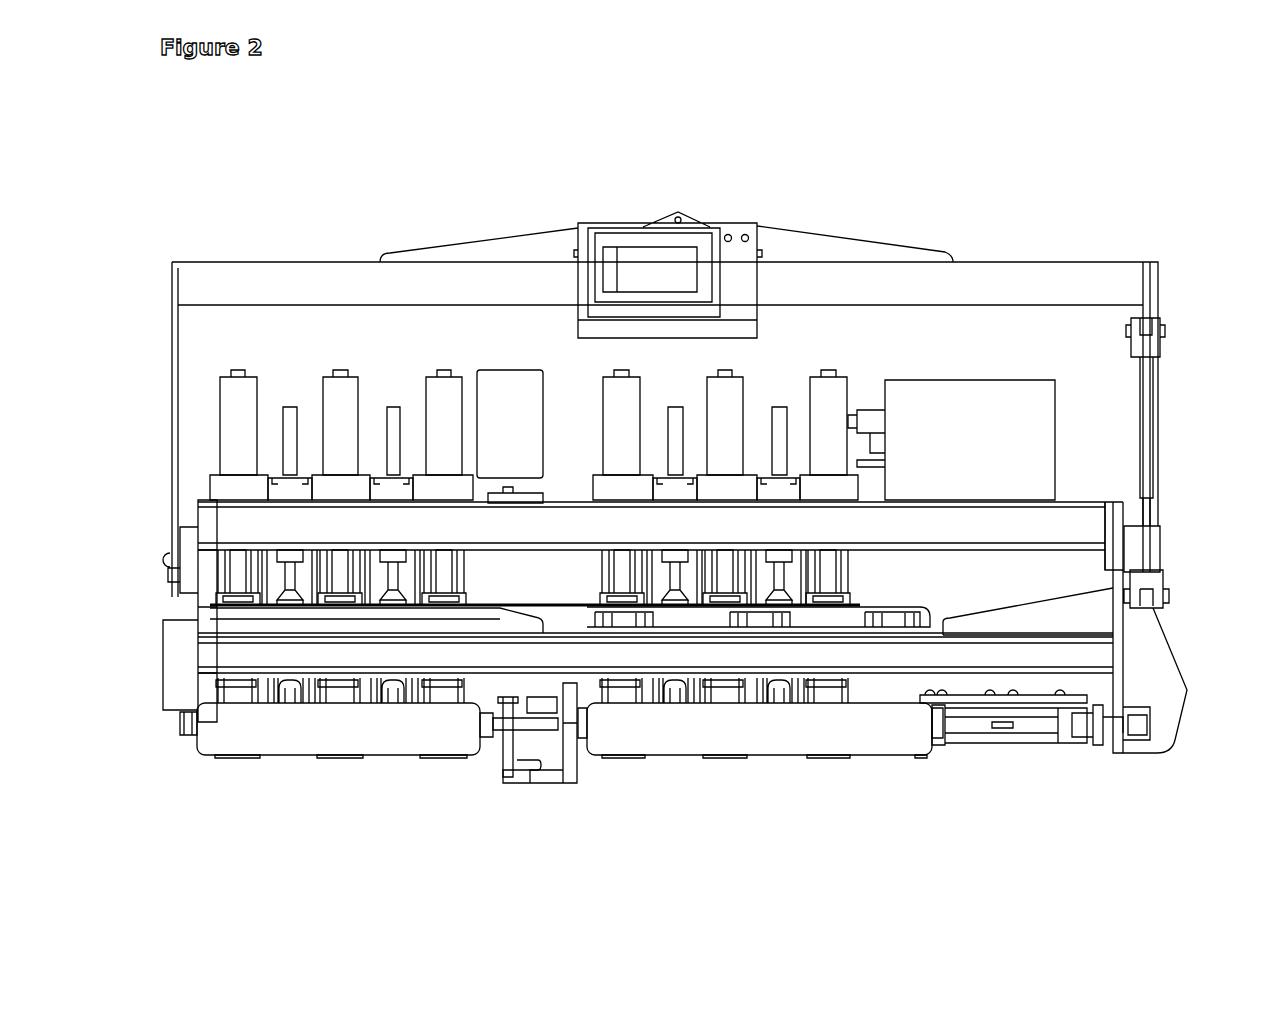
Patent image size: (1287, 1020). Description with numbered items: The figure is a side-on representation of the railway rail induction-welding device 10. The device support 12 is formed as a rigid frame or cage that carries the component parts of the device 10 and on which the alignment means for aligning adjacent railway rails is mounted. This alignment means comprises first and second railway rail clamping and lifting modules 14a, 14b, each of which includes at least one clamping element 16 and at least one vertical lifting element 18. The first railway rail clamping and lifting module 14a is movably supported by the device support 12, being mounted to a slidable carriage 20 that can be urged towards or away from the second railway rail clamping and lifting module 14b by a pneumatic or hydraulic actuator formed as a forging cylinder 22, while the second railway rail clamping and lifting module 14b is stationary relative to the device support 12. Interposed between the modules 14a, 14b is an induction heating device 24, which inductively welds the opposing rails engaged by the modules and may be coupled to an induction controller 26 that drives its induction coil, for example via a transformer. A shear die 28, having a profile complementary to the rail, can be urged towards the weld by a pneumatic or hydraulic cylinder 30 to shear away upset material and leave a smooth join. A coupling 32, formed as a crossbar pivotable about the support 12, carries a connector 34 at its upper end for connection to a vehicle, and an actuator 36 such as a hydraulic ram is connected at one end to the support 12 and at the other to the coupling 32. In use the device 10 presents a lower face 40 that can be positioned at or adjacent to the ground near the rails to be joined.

The railway rail induction-welding device 10 is at (153, 254).
The device support 12 is at (1150, 640).
The first railway rail clamping and lifting module 14a is at (800, 608).
The second railway rail clamping and lifting module 14b is at (342, 623).
The clamping element 16 is at (443, 358).
The vertical lifting element 18 is at (388, 423).
The slidable carriage 20 is at (623, 618).
The forging cylinder 22 is at (1002, 747).
The induction heating device 24 is at (530, 756).
The induction controller 26 is at (510, 377).
The shear die 28 is at (568, 778).
The pneumatic or hydraulic cylinder 30 is at (500, 723).
The coupling 32 is at (1038, 282).
The connector 34 is at (676, 210).
The actuator 36 is at (1152, 350).
The lower face 40 is at (758, 780).